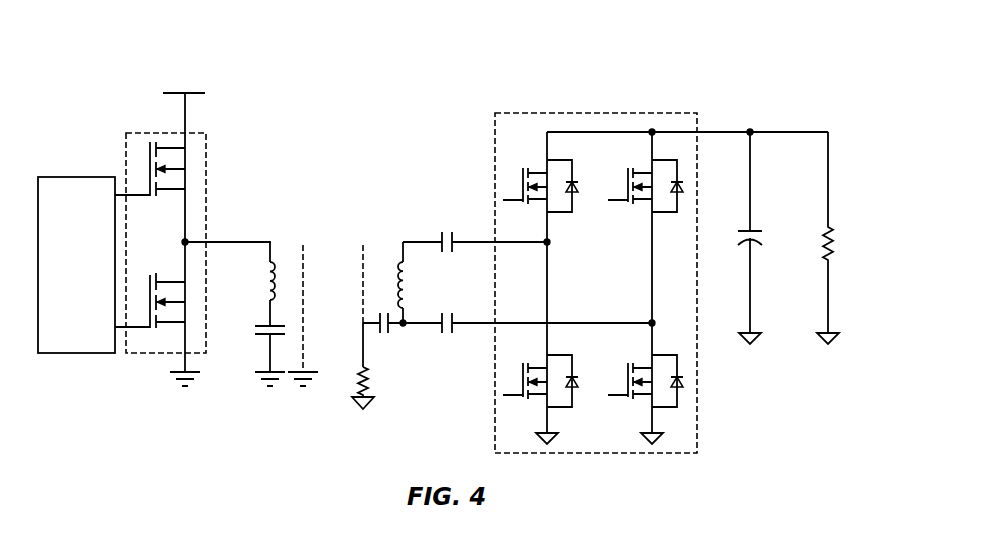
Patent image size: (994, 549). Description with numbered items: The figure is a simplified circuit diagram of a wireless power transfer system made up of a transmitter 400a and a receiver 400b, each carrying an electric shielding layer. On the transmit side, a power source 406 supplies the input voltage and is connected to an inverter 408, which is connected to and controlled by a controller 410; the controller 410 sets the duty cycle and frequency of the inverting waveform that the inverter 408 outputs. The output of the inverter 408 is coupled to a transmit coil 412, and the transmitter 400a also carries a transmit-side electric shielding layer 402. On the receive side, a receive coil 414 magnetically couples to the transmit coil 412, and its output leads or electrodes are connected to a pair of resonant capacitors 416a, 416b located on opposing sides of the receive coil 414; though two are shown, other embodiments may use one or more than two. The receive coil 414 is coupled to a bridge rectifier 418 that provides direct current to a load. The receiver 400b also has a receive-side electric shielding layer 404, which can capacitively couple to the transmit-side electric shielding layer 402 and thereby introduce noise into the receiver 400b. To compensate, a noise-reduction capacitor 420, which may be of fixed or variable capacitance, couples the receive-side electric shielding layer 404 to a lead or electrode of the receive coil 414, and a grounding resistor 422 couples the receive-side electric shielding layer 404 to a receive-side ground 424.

The transmitter 400a is at (229, 64).
The receiver 400b is at (744, 50).
The transmit-side electric shielding layer 402 is at (302, 252).
The receive-side electric shielding layer 404 is at (362, 252).
The power source 406 is at (190, 95).
The inverter 408 is at (132, 132).
The controller 410 is at (65, 177).
The transmit coil 412 is at (270, 296).
The receive coil 414 is at (407, 268).
The resonant capacitor 416a is at (446, 240).
The resonant capacitor 416b is at (451, 333).
The bridge rectifier 418 is at (552, 113).
The noise-reduction capacitor 420 is at (405, 326).
The grounding resistor 422 is at (358, 388).
The receive-side ground 424 is at (365, 411).